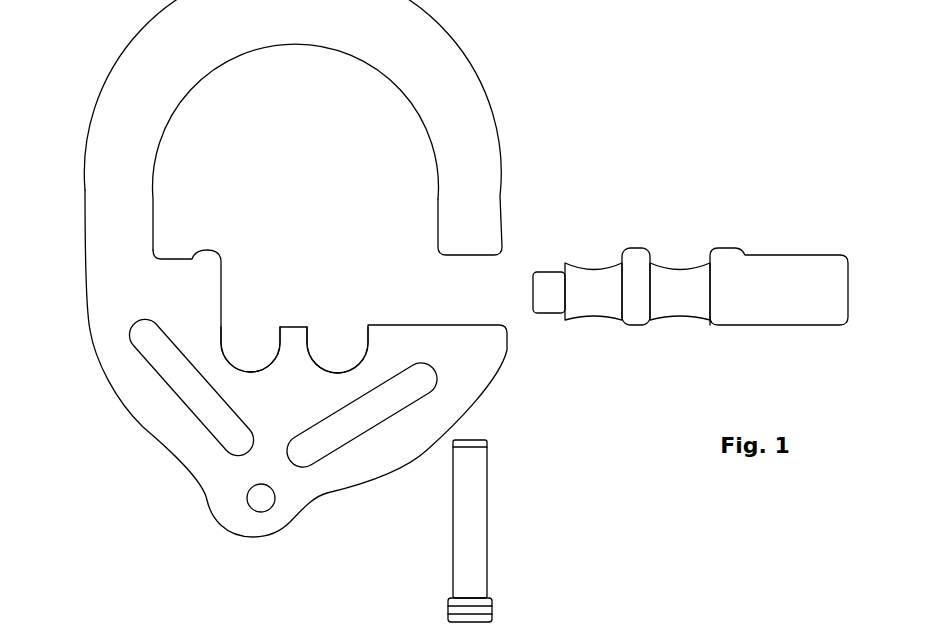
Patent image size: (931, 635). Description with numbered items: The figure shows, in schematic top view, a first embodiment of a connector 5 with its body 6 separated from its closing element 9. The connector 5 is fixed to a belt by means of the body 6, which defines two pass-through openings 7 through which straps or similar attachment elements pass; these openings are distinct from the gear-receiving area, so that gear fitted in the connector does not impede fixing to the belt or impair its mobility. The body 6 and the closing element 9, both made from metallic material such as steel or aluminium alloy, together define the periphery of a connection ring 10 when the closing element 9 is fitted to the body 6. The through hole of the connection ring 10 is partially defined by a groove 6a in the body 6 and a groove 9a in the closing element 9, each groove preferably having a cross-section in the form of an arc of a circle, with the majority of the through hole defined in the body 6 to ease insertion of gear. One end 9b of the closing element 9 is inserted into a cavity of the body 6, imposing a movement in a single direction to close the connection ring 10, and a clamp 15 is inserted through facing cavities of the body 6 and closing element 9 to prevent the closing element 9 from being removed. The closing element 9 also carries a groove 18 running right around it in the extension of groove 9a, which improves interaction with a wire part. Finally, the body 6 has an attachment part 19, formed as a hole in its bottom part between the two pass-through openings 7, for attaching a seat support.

The connector 5 is at (87, 413).
The body 6 is at (497, 135).
The groove 6a is at (257, 323).
The pass-through opening 7 is at (205, 408).
The closing element 9 is at (766, 255).
The groove 9a is at (600, 331).
The end of the closing element 9b is at (540, 313).
The connection ring 10 is at (375, 113).
The clamp 15 is at (487, 503).
The groove 18 is at (601, 263).
The attachment part 19 is at (282, 508).